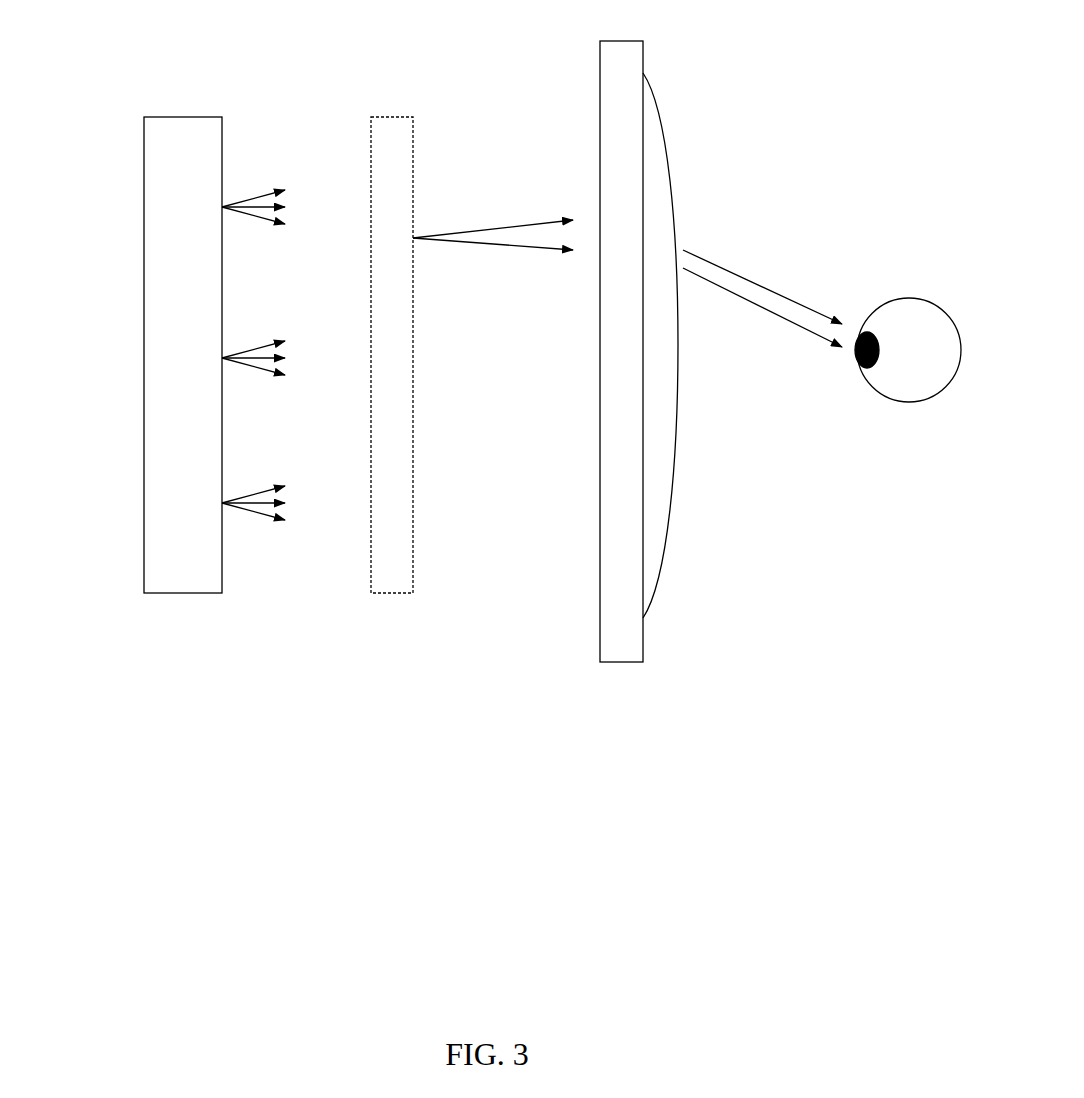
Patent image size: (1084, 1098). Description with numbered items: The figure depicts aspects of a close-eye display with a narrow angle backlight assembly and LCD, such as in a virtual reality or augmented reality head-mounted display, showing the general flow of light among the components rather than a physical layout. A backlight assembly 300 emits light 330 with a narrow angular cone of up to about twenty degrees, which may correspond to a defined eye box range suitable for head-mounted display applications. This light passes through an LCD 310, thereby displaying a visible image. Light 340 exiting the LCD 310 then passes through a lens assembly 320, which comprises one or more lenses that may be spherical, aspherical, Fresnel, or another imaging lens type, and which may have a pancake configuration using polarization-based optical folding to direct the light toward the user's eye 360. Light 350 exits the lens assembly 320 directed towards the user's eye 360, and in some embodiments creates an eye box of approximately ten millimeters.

The backlight assembly 300 is at (137, 120).
The LCD 310 is at (420, 110).
The lens assembly 320 is at (668, 78).
The light 330 is at (294, 207).
The light 340 is at (486, 263).
The light 350 is at (768, 276).
The user's eye 360 is at (903, 416).